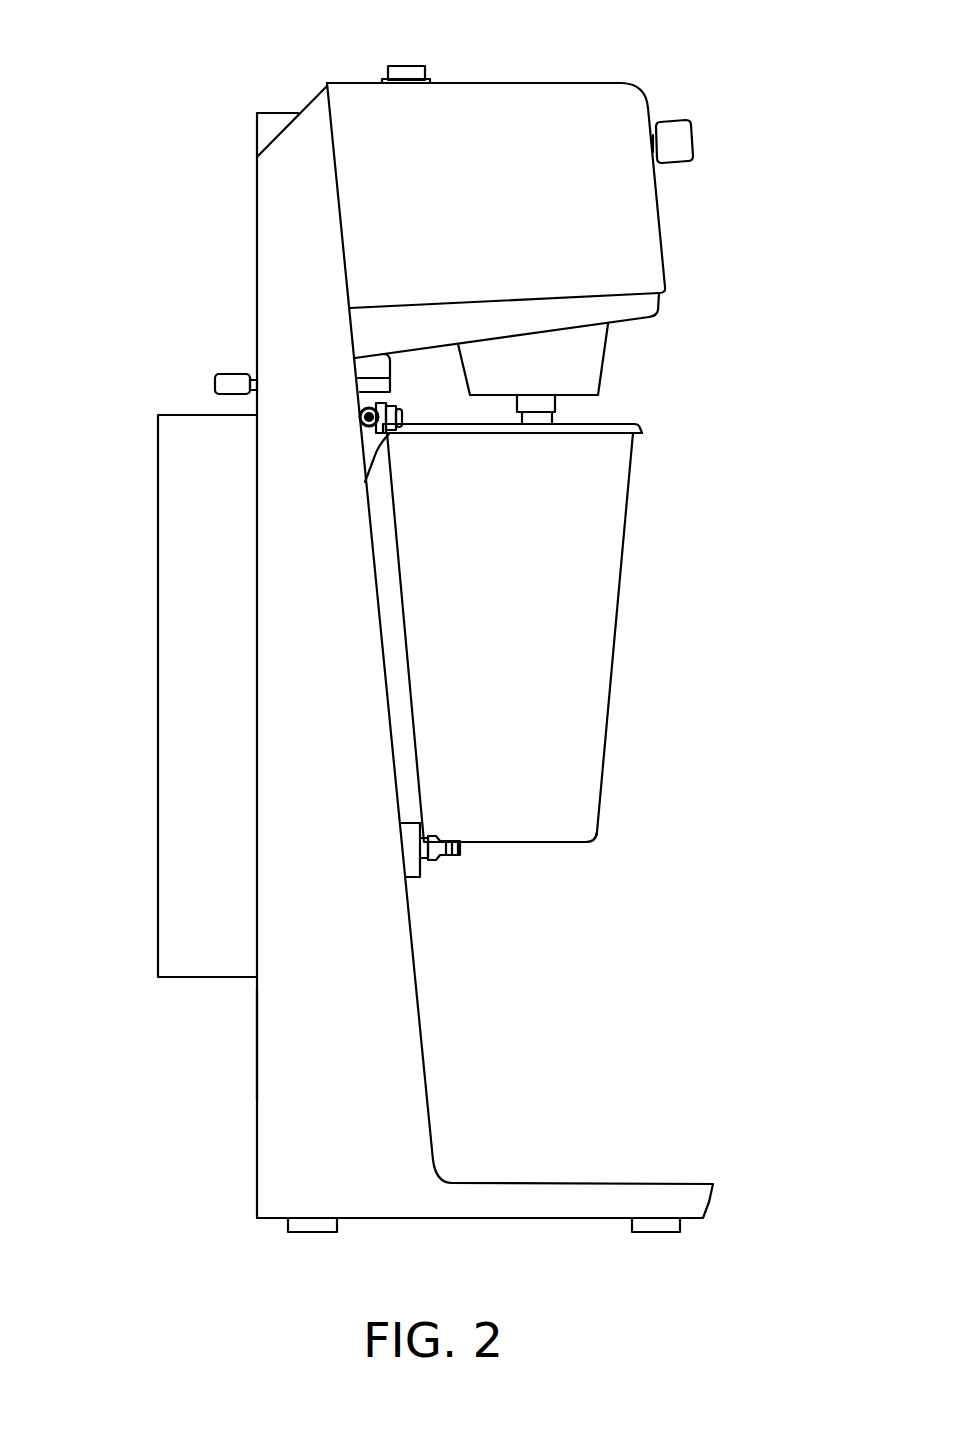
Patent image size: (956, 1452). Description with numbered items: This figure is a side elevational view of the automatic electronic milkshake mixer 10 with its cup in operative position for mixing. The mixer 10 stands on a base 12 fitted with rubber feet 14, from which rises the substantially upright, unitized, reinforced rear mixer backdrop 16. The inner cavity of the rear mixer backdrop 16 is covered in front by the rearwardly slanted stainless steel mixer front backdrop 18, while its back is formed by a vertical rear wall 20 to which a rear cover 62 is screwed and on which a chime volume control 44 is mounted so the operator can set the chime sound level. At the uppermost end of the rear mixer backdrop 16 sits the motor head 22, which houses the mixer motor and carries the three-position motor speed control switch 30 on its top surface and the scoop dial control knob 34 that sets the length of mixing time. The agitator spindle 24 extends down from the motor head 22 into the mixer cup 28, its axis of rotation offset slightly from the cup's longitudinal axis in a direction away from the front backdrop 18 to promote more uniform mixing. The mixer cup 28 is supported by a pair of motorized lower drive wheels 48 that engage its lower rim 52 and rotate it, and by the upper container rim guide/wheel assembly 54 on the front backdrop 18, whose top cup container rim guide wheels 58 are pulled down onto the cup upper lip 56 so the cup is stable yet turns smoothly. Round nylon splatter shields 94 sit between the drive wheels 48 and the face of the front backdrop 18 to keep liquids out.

The automatic electronic milkshake mixer 10 is at (128, 157).
The base 12 is at (530, 1184).
The rubber feet 14 is at (313, 1232).
The rear mixer backdrop 16 is at (268, 1135).
The mixer front backdrop 18 is at (423, 1048).
The rear wall 20 is at (257, 1047).
The motor head 22 is at (530, 100).
The agitator spindle 24 is at (537, 428).
The mixer cup 28 is at (603, 598).
The motor speed control switch 30 is at (405, 72).
The scoop dial control knob 34 is at (683, 142).
The chime volume control 44 is at (228, 374).
The lower drive wheels 48 is at (445, 860).
The lower rim 52 is at (555, 843).
The container rim guide/wheel assembly 54 is at (385, 452).
The upper lip 56 is at (642, 431).
The top cup container rim guide wheels 58 is at (405, 415).
The rear cover 62 is at (166, 594).
The splatter shields 94 is at (415, 878).